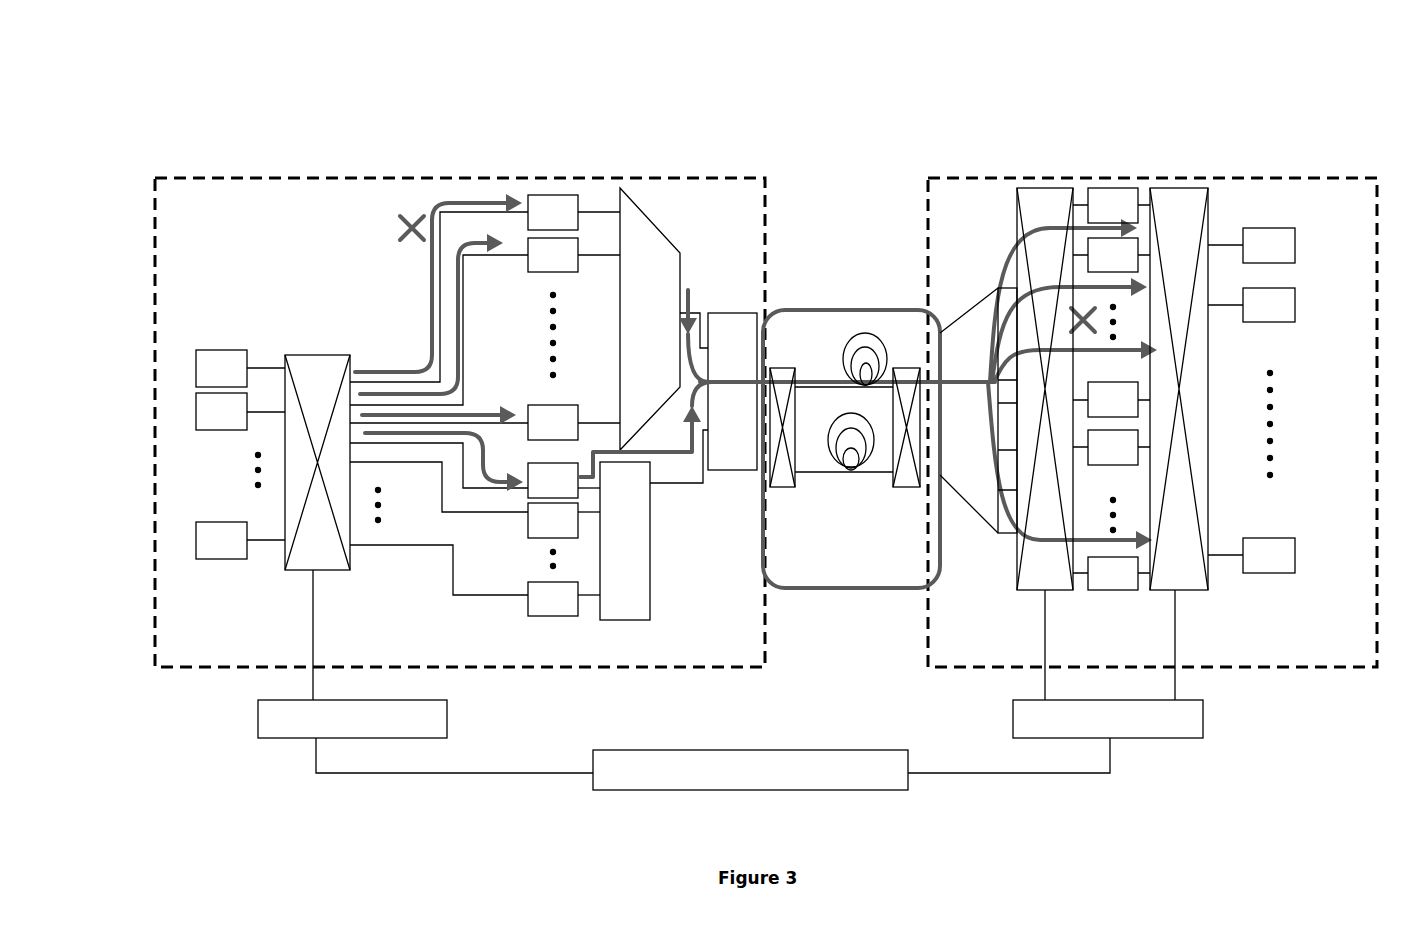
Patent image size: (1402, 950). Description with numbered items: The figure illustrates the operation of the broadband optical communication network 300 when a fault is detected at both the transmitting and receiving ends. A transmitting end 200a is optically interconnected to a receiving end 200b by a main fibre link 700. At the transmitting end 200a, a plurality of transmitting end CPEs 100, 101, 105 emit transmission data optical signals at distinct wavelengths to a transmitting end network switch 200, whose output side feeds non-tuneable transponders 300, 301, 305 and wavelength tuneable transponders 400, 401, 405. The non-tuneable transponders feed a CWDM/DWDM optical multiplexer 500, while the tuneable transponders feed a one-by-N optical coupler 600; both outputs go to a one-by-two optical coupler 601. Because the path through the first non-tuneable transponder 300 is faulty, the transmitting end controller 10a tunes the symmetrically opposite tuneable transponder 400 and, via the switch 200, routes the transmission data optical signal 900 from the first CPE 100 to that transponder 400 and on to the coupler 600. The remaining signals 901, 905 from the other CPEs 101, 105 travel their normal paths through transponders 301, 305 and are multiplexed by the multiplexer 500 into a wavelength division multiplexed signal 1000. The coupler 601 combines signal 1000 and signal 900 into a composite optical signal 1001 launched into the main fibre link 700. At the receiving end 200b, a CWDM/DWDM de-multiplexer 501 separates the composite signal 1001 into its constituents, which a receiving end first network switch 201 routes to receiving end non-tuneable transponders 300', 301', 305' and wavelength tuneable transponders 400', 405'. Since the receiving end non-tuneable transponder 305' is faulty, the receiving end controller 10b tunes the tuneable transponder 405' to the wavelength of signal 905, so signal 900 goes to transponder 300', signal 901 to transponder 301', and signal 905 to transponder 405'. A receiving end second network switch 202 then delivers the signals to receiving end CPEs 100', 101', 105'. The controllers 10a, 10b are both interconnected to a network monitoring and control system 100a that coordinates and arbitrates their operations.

The transmitting end non-tuneable transponder 300 is at (561, 123).
The transmitting end 200a is at (710, 178).
The receiving end 200b is at (957, 178).
The transmitting end CPE 100 is at (240, 368).
The transmitting end CPE 101 is at (240, 411).
The transmitting end CPE 105 is at (240, 540).
The transmitting end network switch 200 is at (317, 527).
The transmitting end non-tuneable transponder 301 is at (574, 255).
The transmitting end non-tuneable transponder 305 is at (574, 422).
The transmitting end wavelength tuneable transponder 400 is at (564, 480).
The transmitting end wavelength tuneable transponder 401 is at (564, 520).
The transmitting end wavelength tuneable transponder 405 is at (564, 599).
The transmitting end CWDM/DWDM optical multiplexer 500 is at (664, 319).
The 1×N optical coupler 600 is at (654, 525).
The 1×2 optical coupler 601 is at (732, 391).
The transmission data optical signal 900 is at (480, 478).
The transmission data optical signal 901 is at (457, 373).
The transmission data optical signal 905 is at (472, 417).
The wavelength division multiplexed transmission data optical signal 1000 is at (693, 320).
The composite optical signal 1001 is at (815, 378).
The main fibre link 700 is at (867, 317).
The receiving end CWDM/DWDM optical de-multiplexer 501 is at (978, 410).
The receiving end first network switch 201 is at (1045, 444).
The receiving end second network switch 202 is at (1179, 444).
The receiving end non-tuneable transponder 300' is at (1111, 205).
The receiving end non-tuneable transponder 301' is at (1111, 255).
The receiving end non-tuneable transponder 305' is at (1111, 399).
The receiving end wavelength tuneable transponder 400' is at (1111, 447).
The receiving end wavelength tuneable transponder 405' is at (1111, 573).
The receiving end CPE 100' is at (1251, 245).
The receiving end CPE 101' is at (1251, 305).
The receiving end CPE 105' is at (1251, 555).
The transmitting end controller 10a is at (425, 736).
The receiving end controller 10b is at (1055, 736).
The network monitoring and control system 100a is at (750, 770).